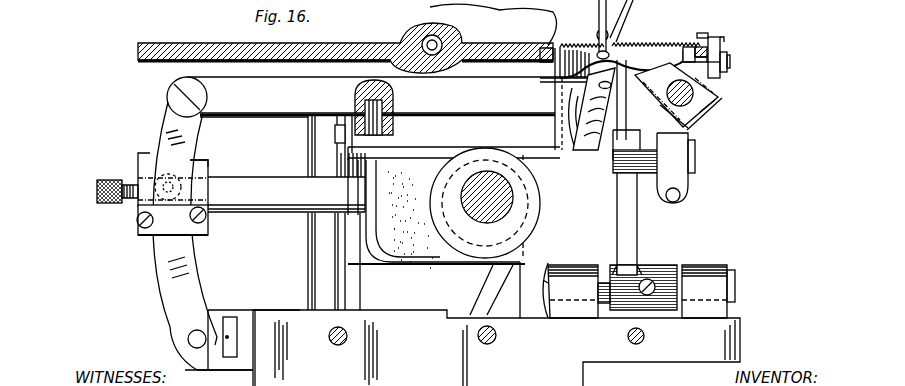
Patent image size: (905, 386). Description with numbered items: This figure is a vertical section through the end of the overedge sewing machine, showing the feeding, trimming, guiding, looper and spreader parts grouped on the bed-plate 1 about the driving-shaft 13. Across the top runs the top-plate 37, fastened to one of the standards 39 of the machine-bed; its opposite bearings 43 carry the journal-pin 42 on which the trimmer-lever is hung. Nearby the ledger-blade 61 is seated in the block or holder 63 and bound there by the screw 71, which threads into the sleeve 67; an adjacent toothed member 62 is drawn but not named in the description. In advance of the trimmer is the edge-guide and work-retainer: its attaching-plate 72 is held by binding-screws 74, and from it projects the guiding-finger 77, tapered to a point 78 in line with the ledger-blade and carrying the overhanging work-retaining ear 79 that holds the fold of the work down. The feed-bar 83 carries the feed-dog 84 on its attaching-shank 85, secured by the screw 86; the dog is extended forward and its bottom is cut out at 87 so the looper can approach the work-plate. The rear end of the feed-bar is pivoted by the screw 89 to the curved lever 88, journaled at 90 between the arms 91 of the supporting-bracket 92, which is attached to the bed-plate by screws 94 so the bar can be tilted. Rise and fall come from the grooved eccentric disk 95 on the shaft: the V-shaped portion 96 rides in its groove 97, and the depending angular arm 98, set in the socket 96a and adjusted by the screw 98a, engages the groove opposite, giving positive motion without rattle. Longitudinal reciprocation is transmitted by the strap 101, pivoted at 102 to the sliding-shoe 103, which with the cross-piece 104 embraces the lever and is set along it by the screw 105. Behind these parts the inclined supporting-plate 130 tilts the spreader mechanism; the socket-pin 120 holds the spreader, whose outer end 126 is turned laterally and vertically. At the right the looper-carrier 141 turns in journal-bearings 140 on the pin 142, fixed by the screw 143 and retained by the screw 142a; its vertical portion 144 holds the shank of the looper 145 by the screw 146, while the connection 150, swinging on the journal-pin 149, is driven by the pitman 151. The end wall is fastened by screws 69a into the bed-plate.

The bed-plate 1 is at (496, 348).
The driving-shaft 13 is at (470, 240).
The top-plate 37 is at (192, 42).
The standard of the machine-bed 39 is at (320, 262).
The journal-pin 42 is at (440, 38).
The bearings 43 is at (418, 26).
The ledger-blade 61 is at (700, 120).
The toothed bar 62 is at (645, 45).
The block or holder 63 is at (722, 97).
The sleeve 67 is at (712, 102).
The screws 69a is at (478, 335).
The screw 71 is at (703, 108).
The attaching-plate 72 is at (722, 70).
The binding-screws 74 is at (732, 60).
The guiding-finger 77 is at (725, 40).
The point of guiding-finger 78 is at (704, 33).
The work-retaining ear 79 is at (720, 38).
The feed-bar 83 is at (388, 99).
The feed-dog 84 is at (682, 48).
The attaching-shank 85 is at (560, 92).
The screw 86 is at (570, 110).
The cut-out of feed-dog 87 is at (548, 28).
The curved lever 88 is at (160, 123).
The screw 89 is at (170, 90).
The journal 90 is at (188, 339).
The arms of supporting-bracket 91 is at (222, 308).
The supporting-bracket 92 is at (262, 318).
The screws 94 is at (232, 347).
The grooved eccentric disk 95 is at (535, 220).
The V-shaped portion of feed-bar 96 is at (428, 147).
The socket of feed-bar 96a is at (385, 102).
The groove of eccentric disk 97 is at (520, 200).
The depending angular arm 98 is at (368, 233).
The screw 98a is at (334, 130).
The strap 101 is at (286, 194).
The pivot connection 102 is at (180, 190).
The sliding-shoe 103 is at (205, 165).
The cross-piece 104 is at (143, 228).
The screw 105 is at (96, 191).
The socket-pin 120 is at (598, 38).
The outer end of spreader 126 is at (636, 12).
The inclined supporting-plate 130 is at (485, 290).
The journal-bearings 140 is at (572, 253).
The looper-carrier 141 is at (640, 238).
The pin 142 is at (604, 303).
The screw 142a is at (540, 290).
The screw 143 is at (652, 278).
The vertical portion of looper-carrier 144 is at (612, 160).
The looper 145 is at (610, 108).
The screw 146 is at (645, 154).
The journal-pin 149 is at (696, 146).
The connection 150 is at (690, 170).
The pitman 151 is at (681, 195).